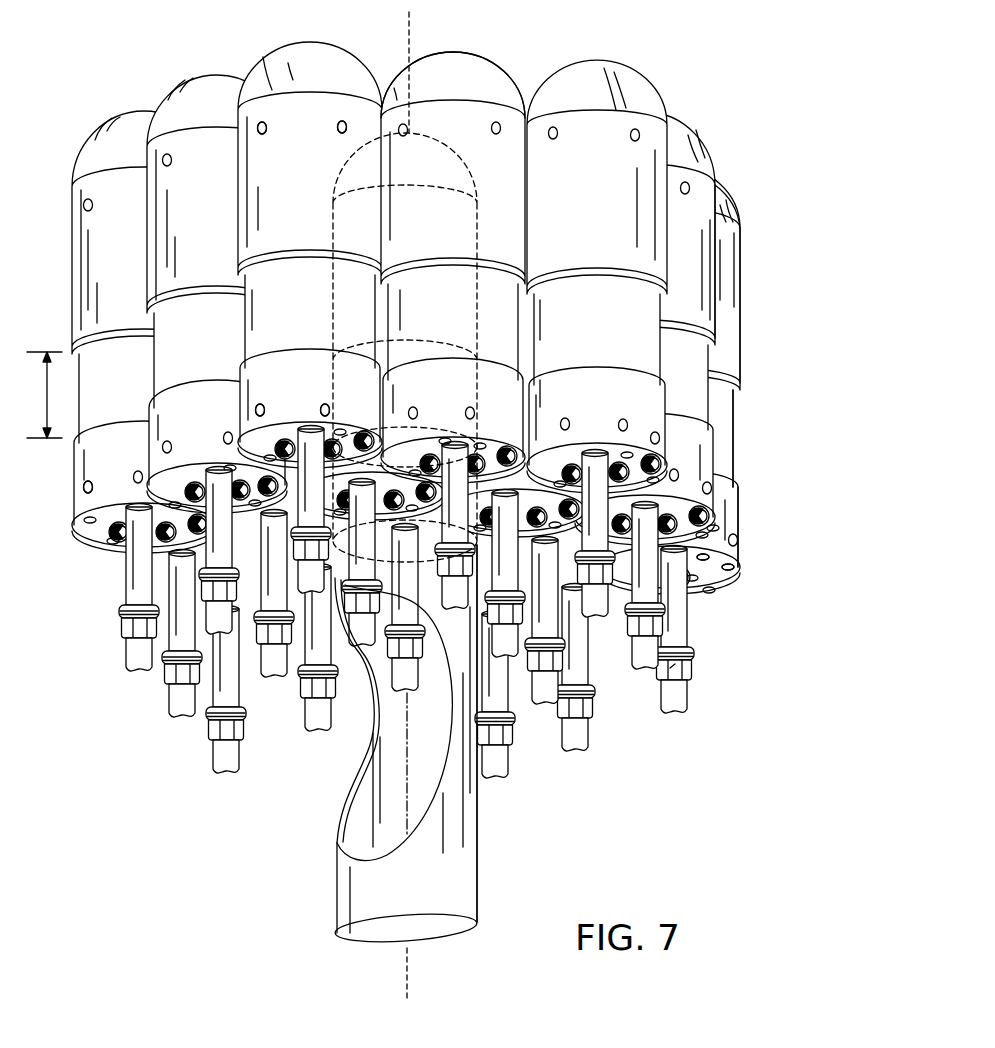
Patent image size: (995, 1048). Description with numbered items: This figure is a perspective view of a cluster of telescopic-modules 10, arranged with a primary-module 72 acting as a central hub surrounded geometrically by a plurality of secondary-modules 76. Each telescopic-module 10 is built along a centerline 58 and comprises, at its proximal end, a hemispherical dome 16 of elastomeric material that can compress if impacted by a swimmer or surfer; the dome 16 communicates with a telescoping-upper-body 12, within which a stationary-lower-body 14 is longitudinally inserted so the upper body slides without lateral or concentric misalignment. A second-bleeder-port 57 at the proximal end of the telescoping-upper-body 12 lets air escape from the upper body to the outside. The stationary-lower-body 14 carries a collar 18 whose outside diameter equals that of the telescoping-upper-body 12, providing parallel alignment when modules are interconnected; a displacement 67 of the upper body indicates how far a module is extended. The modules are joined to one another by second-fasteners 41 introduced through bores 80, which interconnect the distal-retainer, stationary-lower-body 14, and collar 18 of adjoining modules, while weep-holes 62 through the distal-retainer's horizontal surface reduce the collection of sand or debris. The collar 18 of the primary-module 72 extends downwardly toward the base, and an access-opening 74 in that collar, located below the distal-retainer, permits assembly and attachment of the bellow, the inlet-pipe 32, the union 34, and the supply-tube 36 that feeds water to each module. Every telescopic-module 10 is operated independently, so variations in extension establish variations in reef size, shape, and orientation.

The telescopic-module 10 is at (746, 345).
The telescoping-upper-body 12 is at (740, 283).
The stationary-lower-body 14 is at (733, 447).
The hemispherical dome 16 is at (742, 214).
The collar 18 is at (741, 511).
The inlet-pipe 32 is at (588, 660).
The union 34 is at (693, 658).
The supply-tube 36 is at (689, 694).
The second-fastener 41 is at (192, 483).
The second-bleeder-port 57 is at (340, 127).
The centerline 58 is at (411, 42).
The weep-hole 62 is at (705, 561).
The displacement 67 is at (46, 394).
The primary-module 72 is at (490, 212).
The access-opening 74 is at (383, 722).
The secondary-module 76 is at (160, 80).
The bore 80 is at (82, 486).